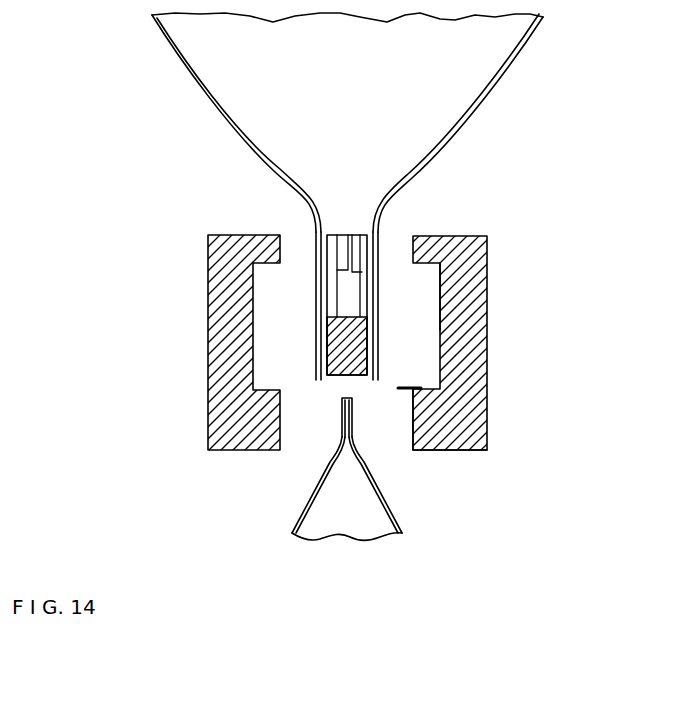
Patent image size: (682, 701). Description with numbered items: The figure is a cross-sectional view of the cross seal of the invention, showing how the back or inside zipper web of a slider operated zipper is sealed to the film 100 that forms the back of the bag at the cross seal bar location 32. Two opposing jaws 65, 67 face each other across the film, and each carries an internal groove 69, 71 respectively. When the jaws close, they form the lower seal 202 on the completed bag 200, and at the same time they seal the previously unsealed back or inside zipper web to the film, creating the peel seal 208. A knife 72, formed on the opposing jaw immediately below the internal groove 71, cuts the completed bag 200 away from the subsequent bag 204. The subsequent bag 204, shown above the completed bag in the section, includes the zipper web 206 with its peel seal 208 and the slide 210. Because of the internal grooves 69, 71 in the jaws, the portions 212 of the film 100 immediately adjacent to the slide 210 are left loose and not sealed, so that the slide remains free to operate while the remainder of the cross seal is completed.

The film 100 is at (517, 63).
The subsequent bag 204 is at (203, 93).
The zipper web 206 is at (380, 244).
The peel seal 208 is at (354, 235).
The portions of film 212 is at (377, 298).
The slide 210 is at (328, 378).
The internal groove 69 is at (263, 390).
The opposing jaw 65 is at (227, 386).
The cross seal bar location 32 is at (477, 247).
The opposing jaw 67 is at (455, 340).
The internal groove 71 is at (422, 264).
The knife 72 is at (419, 388).
The lower seal 202 is at (342, 415).
The completed bag 200 is at (399, 516).